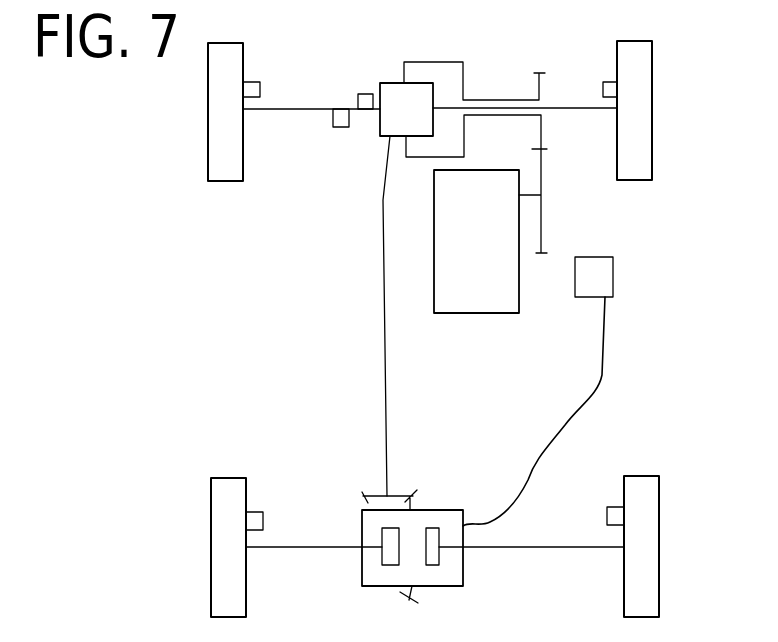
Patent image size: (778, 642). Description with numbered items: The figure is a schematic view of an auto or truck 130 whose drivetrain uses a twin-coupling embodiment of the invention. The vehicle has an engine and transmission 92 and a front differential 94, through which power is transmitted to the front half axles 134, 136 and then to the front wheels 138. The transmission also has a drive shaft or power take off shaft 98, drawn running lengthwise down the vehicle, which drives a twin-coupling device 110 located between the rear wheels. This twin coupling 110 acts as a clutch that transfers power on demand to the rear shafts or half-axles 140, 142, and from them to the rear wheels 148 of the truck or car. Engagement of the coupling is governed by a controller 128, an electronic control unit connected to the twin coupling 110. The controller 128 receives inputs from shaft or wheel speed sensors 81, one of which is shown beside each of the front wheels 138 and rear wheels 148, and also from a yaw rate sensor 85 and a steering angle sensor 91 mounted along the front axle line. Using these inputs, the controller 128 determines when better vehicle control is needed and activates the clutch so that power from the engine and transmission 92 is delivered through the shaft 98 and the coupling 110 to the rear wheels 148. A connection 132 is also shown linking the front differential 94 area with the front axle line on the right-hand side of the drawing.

The shaft or wheel speed sensor 81 is at (258, 84).
The yaw rate sensor 85 is at (338, 128).
The steering angle sensor 91 is at (365, 93).
The engine and transmission 92 is at (510, 292).
The front differential 94 is at (416, 90).
The drive shaft or power take off shaft 98 is at (388, 417).
The twin-coupling device 110 is at (441, 510).
The controller 128 is at (614, 278).
The auto or truck 130 is at (278, 237).
The connection 132 is at (490, 99).
The half axle 134 is at (295, 107).
The half axle 136 is at (582, 110).
The front wheel 138 is at (210, 172).
The rear shaft or half-axle 140 is at (531, 548).
The rear shaft or half-axle 142 is at (319, 549).
The rear wheel 148 is at (213, 565).